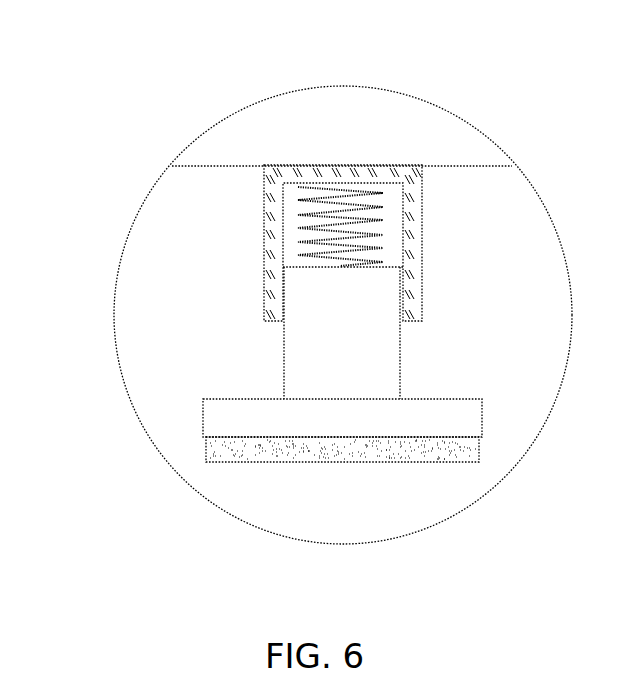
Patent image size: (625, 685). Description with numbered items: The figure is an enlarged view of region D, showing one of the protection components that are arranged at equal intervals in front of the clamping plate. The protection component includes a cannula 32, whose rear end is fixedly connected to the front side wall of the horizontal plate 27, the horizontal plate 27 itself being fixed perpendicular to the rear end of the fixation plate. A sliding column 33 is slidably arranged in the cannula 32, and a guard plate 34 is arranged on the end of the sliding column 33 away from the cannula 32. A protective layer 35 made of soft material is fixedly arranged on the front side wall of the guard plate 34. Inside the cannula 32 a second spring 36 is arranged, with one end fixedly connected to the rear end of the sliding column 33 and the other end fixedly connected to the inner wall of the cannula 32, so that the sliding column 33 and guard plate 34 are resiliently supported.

The enlarged view region D is at (118, 267).
The horizontal plate 27 is at (293, 118).
The cannula 32 is at (273, 247).
The sliding column 33 is at (352, 340).
The guard plate 34 is at (232, 417).
The protective layer 35 is at (307, 438).
The second spring 36 is at (378, 222).